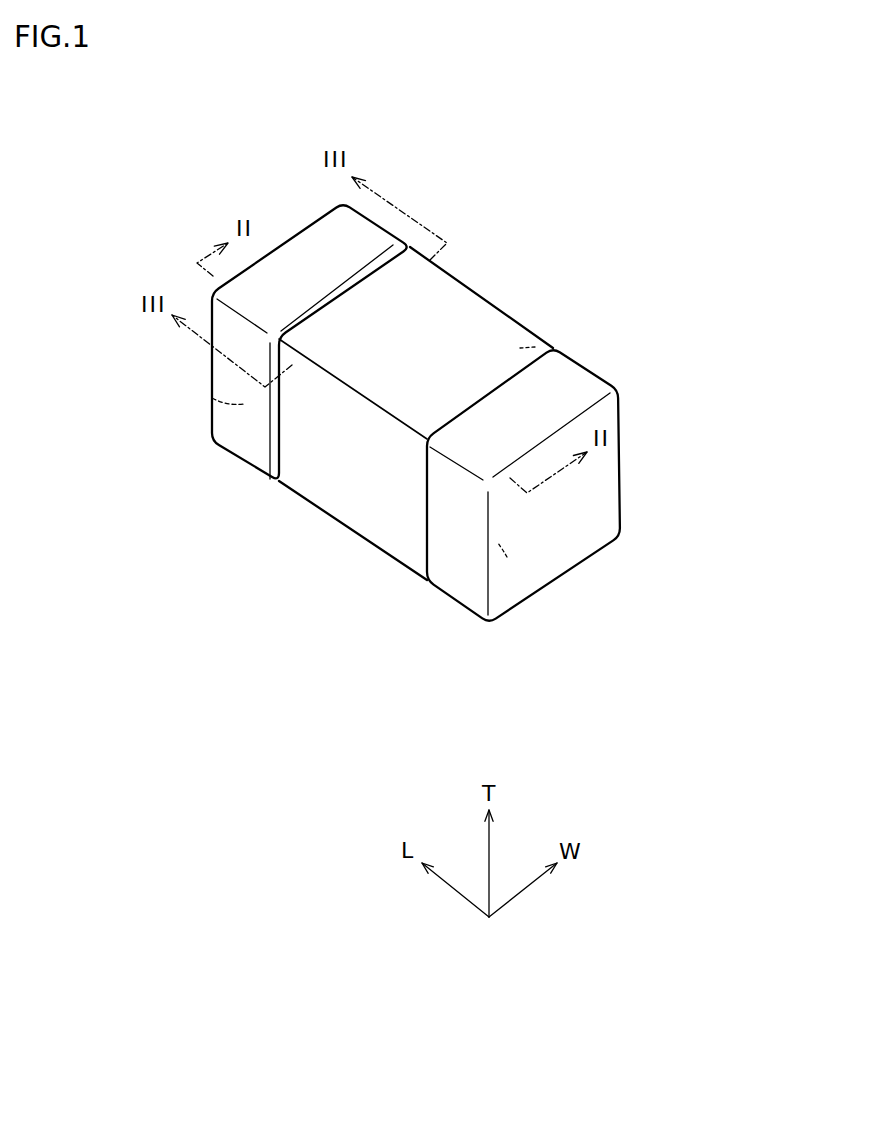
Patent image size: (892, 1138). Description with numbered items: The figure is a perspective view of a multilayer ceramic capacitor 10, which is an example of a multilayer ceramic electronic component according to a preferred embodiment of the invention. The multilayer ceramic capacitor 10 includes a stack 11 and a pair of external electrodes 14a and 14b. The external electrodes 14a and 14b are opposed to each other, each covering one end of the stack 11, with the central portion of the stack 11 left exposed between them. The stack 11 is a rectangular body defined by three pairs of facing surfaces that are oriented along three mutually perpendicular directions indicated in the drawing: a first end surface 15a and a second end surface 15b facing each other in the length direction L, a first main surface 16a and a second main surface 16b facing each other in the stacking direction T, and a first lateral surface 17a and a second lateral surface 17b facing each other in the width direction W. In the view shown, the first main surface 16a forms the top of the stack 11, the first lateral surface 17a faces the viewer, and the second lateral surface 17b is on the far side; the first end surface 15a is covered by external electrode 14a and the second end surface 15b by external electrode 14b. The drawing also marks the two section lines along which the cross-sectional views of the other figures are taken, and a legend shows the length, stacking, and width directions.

The multilayer ceramic capacitor 10 is at (597, 211).
The stack 11 is at (459, 307).
The external electrode 14a is at (315, 242).
The external electrode 14b is at (582, 373).
The first end surface 15a is at (210, 398).
The second end surface 15b is at (507, 557).
The first main surface 16a is at (503, 337).
The second main surface 16b is at (400, 544).
The first lateral surface 17a is at (357, 490).
The second lateral surface 17b is at (543, 345).